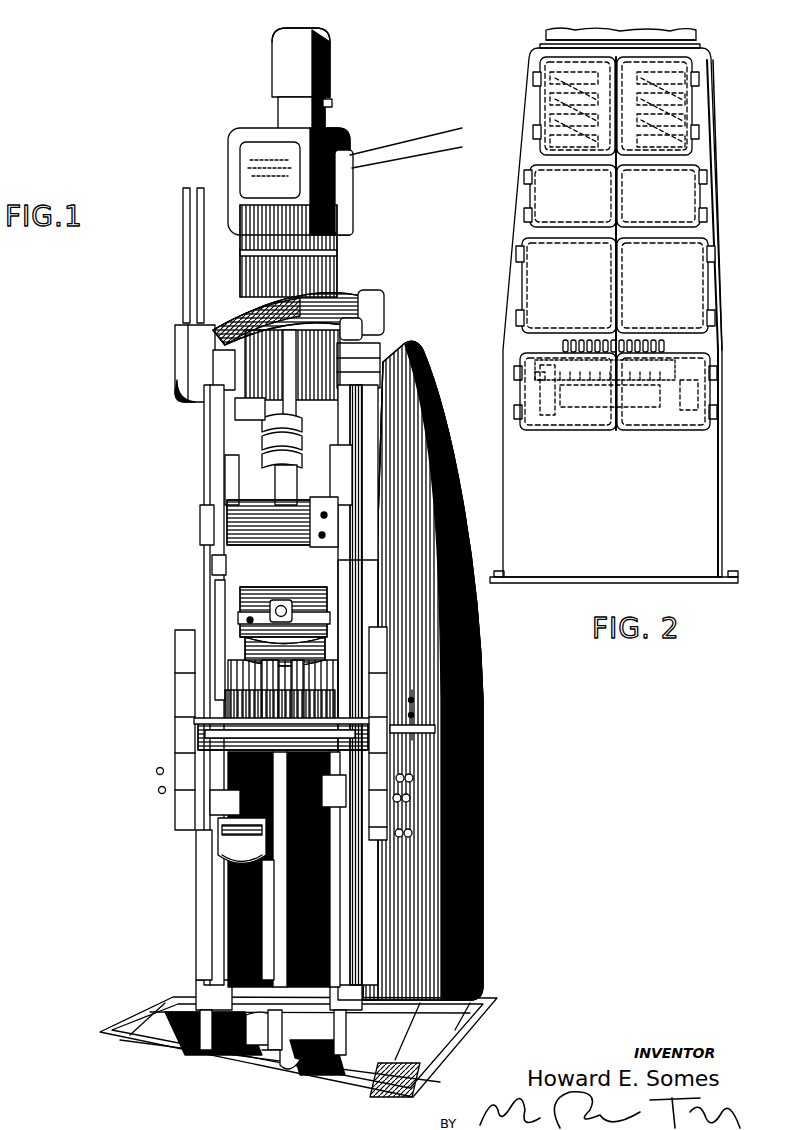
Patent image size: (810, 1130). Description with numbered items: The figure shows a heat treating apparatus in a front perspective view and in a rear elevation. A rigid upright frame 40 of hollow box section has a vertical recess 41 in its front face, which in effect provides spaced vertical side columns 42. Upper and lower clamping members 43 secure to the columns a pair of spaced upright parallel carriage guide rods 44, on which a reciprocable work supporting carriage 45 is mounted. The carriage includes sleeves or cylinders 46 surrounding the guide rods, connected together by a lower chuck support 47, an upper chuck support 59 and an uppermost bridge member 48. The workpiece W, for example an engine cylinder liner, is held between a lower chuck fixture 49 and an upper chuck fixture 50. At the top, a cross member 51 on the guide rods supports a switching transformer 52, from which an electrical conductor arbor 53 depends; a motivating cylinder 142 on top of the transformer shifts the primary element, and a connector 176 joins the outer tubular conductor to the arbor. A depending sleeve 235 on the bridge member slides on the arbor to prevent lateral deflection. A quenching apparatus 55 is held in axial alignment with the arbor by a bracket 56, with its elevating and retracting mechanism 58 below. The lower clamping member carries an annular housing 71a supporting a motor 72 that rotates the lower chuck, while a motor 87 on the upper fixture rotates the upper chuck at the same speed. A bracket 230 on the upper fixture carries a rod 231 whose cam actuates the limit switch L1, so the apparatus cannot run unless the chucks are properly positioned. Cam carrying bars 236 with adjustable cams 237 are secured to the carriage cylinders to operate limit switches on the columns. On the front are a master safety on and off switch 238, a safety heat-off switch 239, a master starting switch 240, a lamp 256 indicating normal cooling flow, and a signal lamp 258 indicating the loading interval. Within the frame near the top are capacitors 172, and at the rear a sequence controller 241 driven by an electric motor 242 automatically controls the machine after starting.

In FIG. 1, the rigid upright frame 40 is at (200, 555).
In FIG. 2, the rigid upright frame 40 is at (716, 212).
In FIG. 1, the vertical recess 41 is at (442, 872).
In FIG. 1, the vertical side columns 42 is at (180, 852).
In FIG. 1, the clamping members 43 is at (190, 402).
In FIG. 1, the carriage guide rods 44 is at (204, 930).
In FIG. 1, the work supporting carriage 45 is at (373, 622).
In FIG. 1, the sleeves or cylinders 46 is at (214, 605).
In FIG. 1, the lower chuck support 47 is at (420, 735).
In FIG. 1, the uppermost bridge member 48 is at (268, 455).
In FIG. 1, the lower chuck fixture 49 is at (222, 732).
In FIG. 1, the upper chuck fixture 50 is at (232, 650).
In FIG. 1, the cross member 51 is at (345, 307).
In FIG. 1, the switching transformer 52 is at (335, 262).
In FIG. 1, the electrical conductor arbor 53 is at (360, 330).
In FIG. 1, the quenching apparatus 55 is at (262, 950).
In FIG. 1, the bracket 56 is at (240, 1052).
In FIG. 1, the elevating and retracting mechanism 58 is at (262, 1065).
In FIG. 1, the upper chuck support 59 is at (360, 512).
In FIG. 1, the annular housing 71a is at (212, 808).
In FIG. 1, the motor 72 is at (226, 852).
In FIG. 1, the motor 87 is at (230, 570).
In FIG. 1, the motivating cylinder 142 is at (279, 81).
In FIG. 2, the capacitors 172 is at (697, 96).
In FIG. 1, the connector 176 is at (290, 415).
In FIG. 1, the bracket 230 is at (262, 603).
In FIG. 1, the rod 231 is at (230, 530).
In FIG. 1, the depending sleeve 235 is at (278, 470).
In FIG. 1, the cam carrying bars 236 is at (380, 655).
In FIG. 1, the adjustable cams 237 is at (182, 690).
In FIG. 1, the master safety on and off switch 238 is at (157, 771).
In FIG. 1, the safety heat-off switch 239 is at (162, 793).
In FIG. 1, the master starting switch 240 is at (416, 830).
In FIG. 2, the sequence controller 241 is at (668, 368).
In FIG. 2, the electric motor 242 is at (692, 394).
In FIG. 1, the lamp 256 is at (414, 708).
In FIG. 1, the signal lamp 258 is at (412, 690).
In FIG. 1, the limit switch L1 is at (262, 485).
In FIG. 1, the workpiece W is at (226, 700).